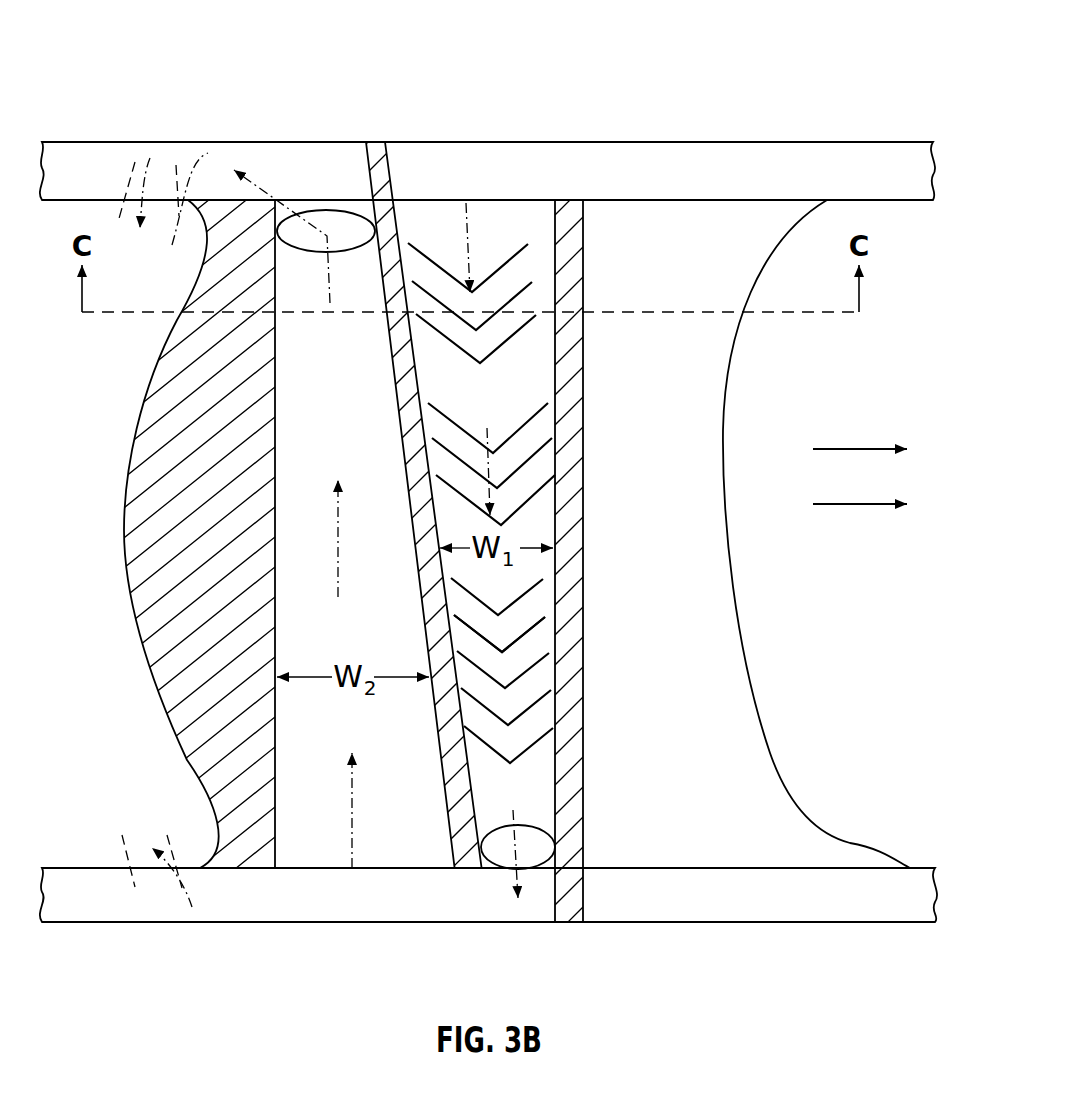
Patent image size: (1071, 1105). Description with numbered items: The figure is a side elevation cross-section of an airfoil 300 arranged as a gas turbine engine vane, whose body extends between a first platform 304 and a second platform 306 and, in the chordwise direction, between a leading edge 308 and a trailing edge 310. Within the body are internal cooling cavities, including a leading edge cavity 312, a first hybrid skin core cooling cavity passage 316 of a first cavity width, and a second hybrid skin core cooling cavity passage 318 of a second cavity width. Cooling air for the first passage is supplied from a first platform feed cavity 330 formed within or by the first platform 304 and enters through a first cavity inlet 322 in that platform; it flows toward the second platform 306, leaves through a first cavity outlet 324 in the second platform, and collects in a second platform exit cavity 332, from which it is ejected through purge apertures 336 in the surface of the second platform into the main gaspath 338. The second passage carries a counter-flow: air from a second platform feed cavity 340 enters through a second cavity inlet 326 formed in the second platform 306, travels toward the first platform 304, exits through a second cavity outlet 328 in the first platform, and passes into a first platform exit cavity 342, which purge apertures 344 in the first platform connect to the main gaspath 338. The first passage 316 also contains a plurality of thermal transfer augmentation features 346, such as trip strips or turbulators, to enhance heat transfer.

The airfoil 300 is at (130, 46).
The first platform 304 is at (742, 142).
The second platform 306 is at (534, 922).
The leading edge 308 is at (752, 656).
The trailing edge 310 is at (124, 526).
The leading edge cavity 312 is at (639, 495).
The first hybrid skin core cooling cavity passage 316 is at (461, 410).
The second hybrid skin core cooling cavity passage 318 is at (314, 422).
The first cavity inlet 322 is at (443, 198).
The first cavity outlet 324 is at (510, 845).
The second cavity inlet 326 is at (296, 872).
The second cavity outlet 328 is at (323, 221).
The first platform feed cavity 330 is at (400, 162).
The second platform exit cavity 332 is at (719, 894).
The purge apertures 336 is at (133, 878).
The main gaspath 338 is at (831, 495).
The second platform feed cavity 340 is at (358, 897).
The first platform exit cavity 342 is at (257, 162).
The purge apertures 344 is at (132, 185).
The thermal transfer augmentation features 346 is at (540, 622).